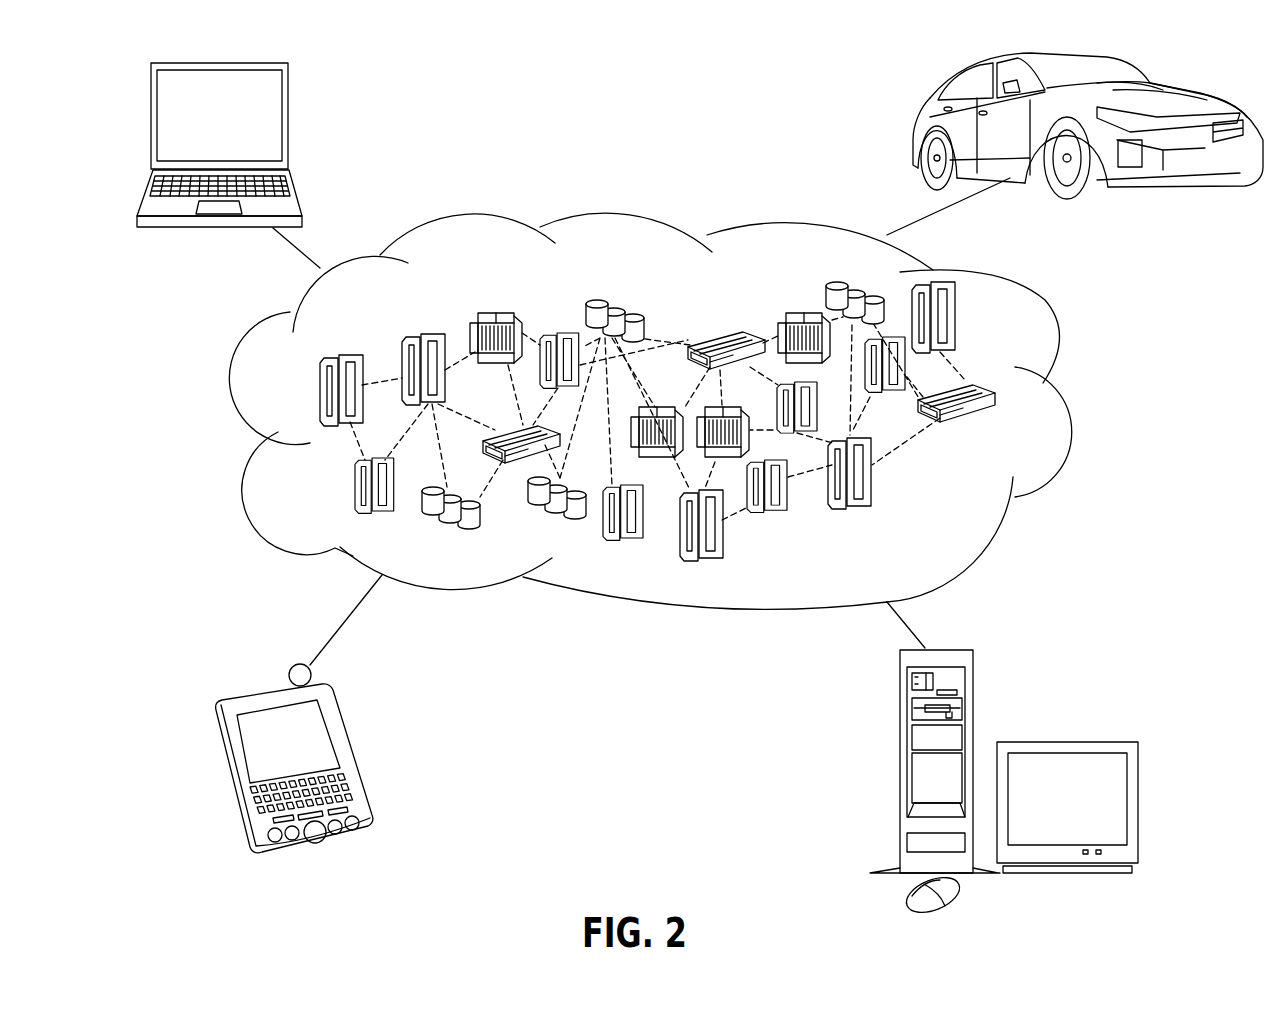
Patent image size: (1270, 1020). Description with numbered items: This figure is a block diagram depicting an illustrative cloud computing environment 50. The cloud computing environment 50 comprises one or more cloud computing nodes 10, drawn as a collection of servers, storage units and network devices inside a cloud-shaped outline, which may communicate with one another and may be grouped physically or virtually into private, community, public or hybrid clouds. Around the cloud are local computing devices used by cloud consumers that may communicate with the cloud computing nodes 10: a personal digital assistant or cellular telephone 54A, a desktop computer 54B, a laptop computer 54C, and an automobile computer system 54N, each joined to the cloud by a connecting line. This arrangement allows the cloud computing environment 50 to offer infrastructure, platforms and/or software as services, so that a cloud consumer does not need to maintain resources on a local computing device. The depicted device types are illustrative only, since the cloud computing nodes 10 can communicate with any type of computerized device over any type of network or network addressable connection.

The laptop computer 54C is at (288, 100).
The automobile computer system 54N is at (915, 118).
The cloud computing environment 50 is at (1065, 400).
The cloud computing nodes 10 is at (985, 508).
The personal digital assistant (PDA) or cellular telephone 54A is at (345, 722).
The desktop computer 54B is at (898, 708).